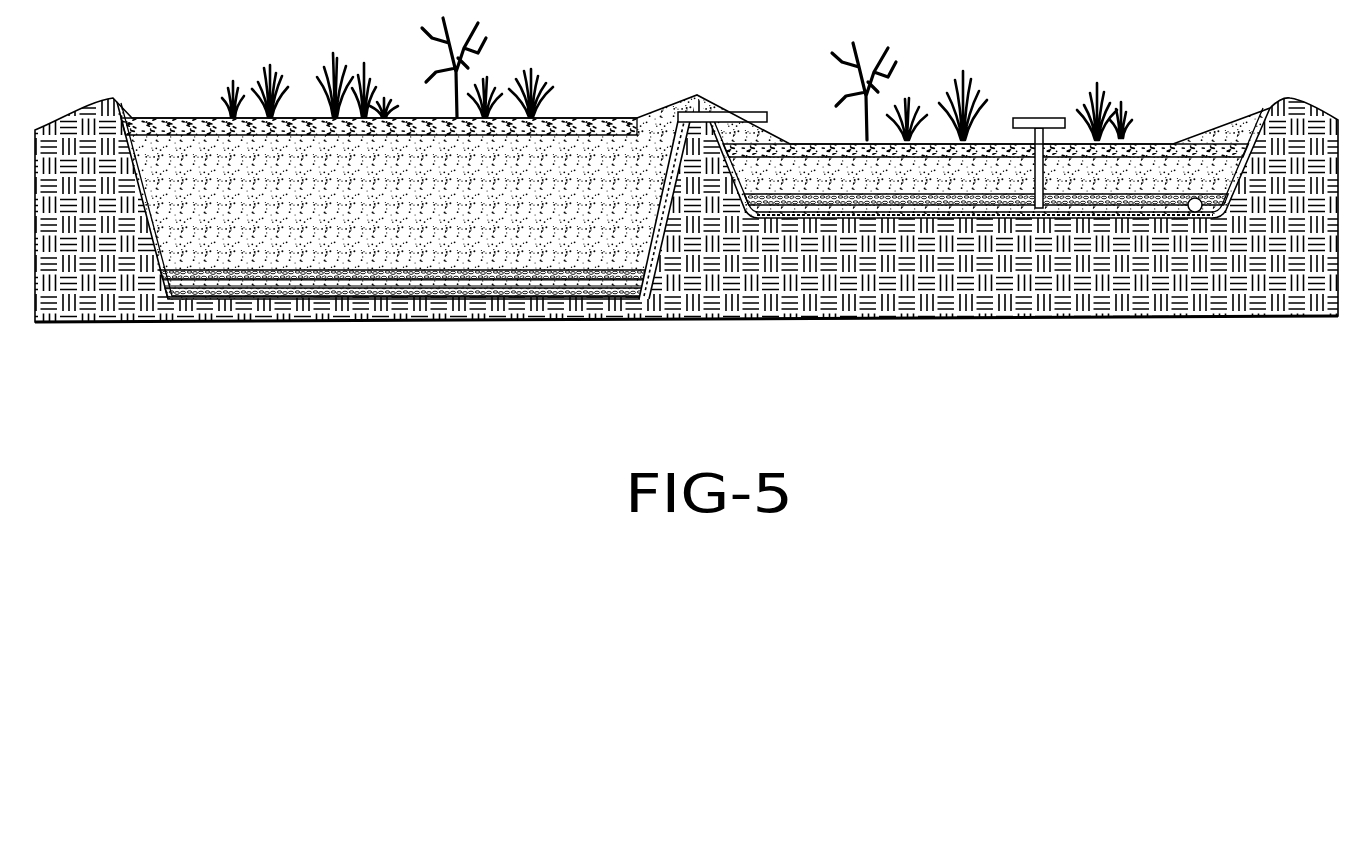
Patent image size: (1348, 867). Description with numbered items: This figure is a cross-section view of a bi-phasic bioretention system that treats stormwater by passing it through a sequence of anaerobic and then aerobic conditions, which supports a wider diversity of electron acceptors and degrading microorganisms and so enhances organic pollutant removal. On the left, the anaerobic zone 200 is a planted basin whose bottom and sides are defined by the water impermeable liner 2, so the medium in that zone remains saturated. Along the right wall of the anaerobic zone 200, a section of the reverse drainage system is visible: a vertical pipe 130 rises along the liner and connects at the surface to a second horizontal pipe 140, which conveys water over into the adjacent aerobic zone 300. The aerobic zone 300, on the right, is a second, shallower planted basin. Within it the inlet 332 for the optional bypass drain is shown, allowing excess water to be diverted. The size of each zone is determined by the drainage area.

The liner 2 is at (140, 173).
The first basin filter media 200 is at (402, 210).
The riser pipe 130 is at (658, 212).
The outlet pipe 140 is at (750, 112).
The second basin 300 is at (1143, 175).
The cleanout 332 is at (1050, 118).